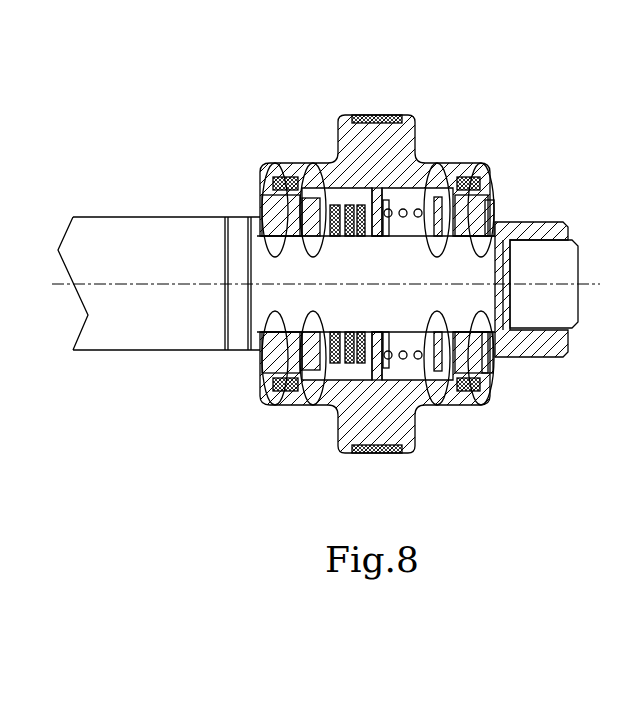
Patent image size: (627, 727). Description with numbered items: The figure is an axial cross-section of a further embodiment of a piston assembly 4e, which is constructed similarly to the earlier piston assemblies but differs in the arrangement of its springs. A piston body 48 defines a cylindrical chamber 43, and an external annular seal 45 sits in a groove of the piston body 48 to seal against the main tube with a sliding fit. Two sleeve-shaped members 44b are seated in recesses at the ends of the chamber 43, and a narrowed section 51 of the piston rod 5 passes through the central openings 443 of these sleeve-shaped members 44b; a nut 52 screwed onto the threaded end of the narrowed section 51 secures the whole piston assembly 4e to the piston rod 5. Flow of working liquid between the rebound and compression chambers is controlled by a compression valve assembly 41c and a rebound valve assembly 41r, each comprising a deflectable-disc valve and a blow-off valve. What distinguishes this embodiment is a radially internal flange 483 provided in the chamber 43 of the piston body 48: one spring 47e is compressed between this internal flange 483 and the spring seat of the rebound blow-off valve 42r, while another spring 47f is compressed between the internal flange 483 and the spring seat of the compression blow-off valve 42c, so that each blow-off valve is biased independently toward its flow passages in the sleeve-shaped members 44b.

The piston rod 5 is at (114, 216).
The piston assembly 4e is at (243, 187).
The compression valve assembly 41c is at (275, 167).
The rebound valve assembly 41r is at (480, 165).
The rebound blow-off valve 42r is at (320, 196).
The compression blow-off valve 42c is at (437, 196).
The cylindrical chamber 43 is at (361, 196).
The external annular seal 45 is at (376, 196).
The narrowed section 51 is at (527, 262).
The nut 52 is at (557, 240).
The central openings 443 is at (270, 385).
The sleeve-shaped members 44b is at (274, 373).
The spring 47e is at (362, 383).
The spring 47f is at (425, 380).
The radially internal flange 483 is at (418, 385).
The piston body 48 is at (392, 380).